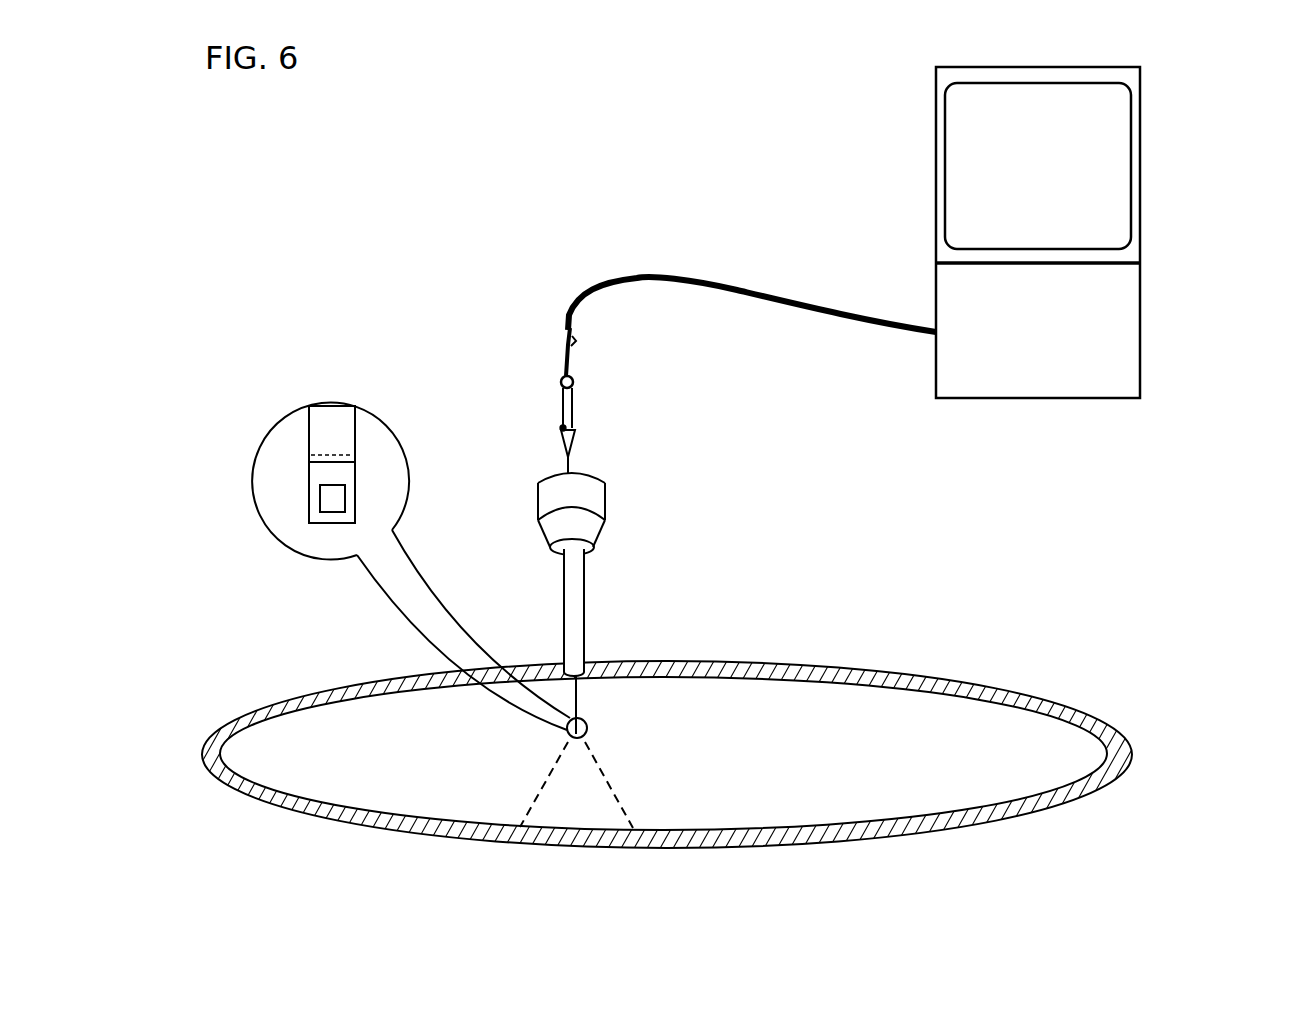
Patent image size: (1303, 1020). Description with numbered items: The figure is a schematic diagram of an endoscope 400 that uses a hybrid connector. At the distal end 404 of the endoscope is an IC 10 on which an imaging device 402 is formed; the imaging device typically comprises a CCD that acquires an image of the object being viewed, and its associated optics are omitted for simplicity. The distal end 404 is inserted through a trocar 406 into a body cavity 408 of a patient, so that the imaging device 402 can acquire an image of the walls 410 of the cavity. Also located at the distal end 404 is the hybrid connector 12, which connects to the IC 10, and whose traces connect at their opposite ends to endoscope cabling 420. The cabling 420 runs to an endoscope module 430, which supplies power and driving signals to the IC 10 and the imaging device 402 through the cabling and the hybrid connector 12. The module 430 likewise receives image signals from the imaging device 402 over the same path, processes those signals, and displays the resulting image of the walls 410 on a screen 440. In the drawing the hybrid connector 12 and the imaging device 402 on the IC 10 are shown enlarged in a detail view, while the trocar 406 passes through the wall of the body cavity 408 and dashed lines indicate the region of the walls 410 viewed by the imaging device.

The IC 10 is at (307, 483).
The hybrid connector 12 is at (355, 432).
The imaging device 402 is at (346, 497).
The endoscope 400 is at (575, 457).
The trocar 406 is at (584, 585).
The distal end 404 is at (590, 725).
The body cavity 408 is at (671, 760).
The walls 410 is at (556, 830).
The endoscope cabling 420 is at (622, 276).
The endoscope module 430 is at (1140, 357).
The screen 440 is at (1140, 197).